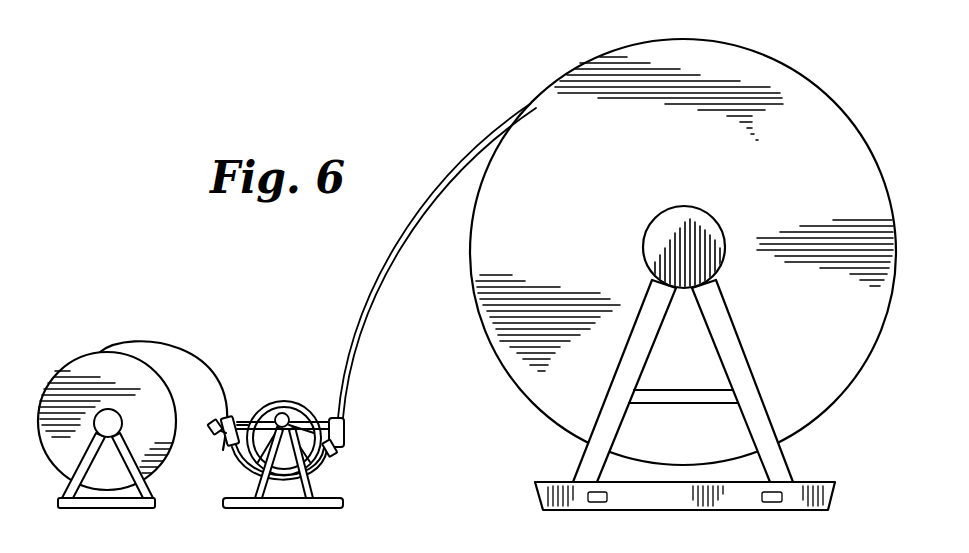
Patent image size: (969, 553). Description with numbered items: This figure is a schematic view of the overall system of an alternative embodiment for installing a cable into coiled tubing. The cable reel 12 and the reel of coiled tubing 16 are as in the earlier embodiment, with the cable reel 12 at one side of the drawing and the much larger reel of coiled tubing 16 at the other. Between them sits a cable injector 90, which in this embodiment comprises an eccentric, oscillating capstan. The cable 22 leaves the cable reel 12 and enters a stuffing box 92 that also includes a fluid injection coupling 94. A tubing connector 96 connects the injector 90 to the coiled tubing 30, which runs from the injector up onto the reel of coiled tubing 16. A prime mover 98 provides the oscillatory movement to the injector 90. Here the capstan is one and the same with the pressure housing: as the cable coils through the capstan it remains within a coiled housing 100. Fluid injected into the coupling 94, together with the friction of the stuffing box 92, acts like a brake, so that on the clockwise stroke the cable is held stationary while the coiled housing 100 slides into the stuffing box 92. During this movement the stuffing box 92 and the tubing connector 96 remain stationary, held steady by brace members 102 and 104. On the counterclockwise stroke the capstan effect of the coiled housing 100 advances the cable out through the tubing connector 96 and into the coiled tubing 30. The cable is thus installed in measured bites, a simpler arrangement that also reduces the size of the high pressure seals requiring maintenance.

The reel of coiled tubing 16 is at (773, 59).
The cable reel 12 is at (75, 359).
The cable 22 is at (171, 343).
The coiled tubing 30 is at (386, 266).
The cable injector 90 is at (290, 401).
The stuffing box 92 is at (231, 417).
The fluid injection coupling 94 is at (222, 445).
The tubing connector 96 is at (345, 431).
The prime mover 98 is at (289, 419).
The coiled housing 100 is at (297, 402).
The brace member 102 is at (247, 424).
The brace member 104 is at (333, 453).